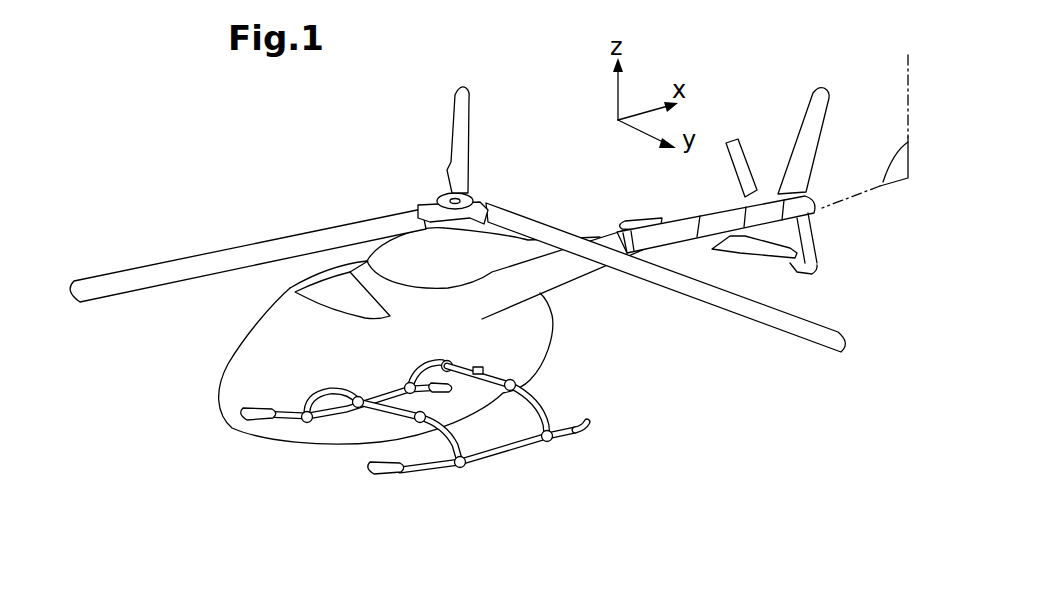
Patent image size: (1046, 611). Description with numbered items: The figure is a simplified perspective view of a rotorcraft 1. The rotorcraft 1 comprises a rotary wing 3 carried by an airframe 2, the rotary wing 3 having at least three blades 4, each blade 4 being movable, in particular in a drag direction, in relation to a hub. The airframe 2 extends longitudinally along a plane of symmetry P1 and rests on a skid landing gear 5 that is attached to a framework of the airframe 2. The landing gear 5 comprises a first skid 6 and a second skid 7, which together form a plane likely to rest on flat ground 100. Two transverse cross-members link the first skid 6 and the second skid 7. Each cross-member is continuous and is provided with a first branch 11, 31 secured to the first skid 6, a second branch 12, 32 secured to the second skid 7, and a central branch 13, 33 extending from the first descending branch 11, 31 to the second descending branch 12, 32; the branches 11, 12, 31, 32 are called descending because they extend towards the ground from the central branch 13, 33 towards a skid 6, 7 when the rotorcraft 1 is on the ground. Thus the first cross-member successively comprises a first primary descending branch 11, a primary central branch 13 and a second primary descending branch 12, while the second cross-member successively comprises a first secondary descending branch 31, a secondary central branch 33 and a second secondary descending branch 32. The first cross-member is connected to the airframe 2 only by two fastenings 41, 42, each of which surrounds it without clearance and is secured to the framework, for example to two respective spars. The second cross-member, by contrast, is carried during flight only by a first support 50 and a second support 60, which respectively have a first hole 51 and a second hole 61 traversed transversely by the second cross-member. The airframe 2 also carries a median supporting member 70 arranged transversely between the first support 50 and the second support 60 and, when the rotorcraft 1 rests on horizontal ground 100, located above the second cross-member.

The rotorcraft 1 is at (340, 170).
The airframe 2 is at (276, 333).
The rotary wing 3 is at (457, 219).
The blade 4 is at (463, 110).
The skid landing gear 5 is at (498, 398).
The first skid 6 is at (470, 398).
The second skid 7 is at (322, 432).
The first primary descending branch 11 is at (484, 477).
The second primary descending branch 12 is at (346, 424).
The primary central branch 13 is at (405, 463).
The first secondary descending branch 31 is at (568, 433).
The second secondary descending branch 32 is at (399, 398).
The secondary central branch 33 is at (497, 375).
The fastening 41 is at (435, 470).
The fastening 42 is at (360, 393).
The first support 50 is at (512, 373).
The first hole 51 is at (537, 372).
The second support 60 is at (449, 362).
The second hole 61 is at (428, 354).
The median supporting member 70 is at (477, 366).
The flat ground 100 is at (500, 307).
The plane of symmetry P1 is at (910, 170).